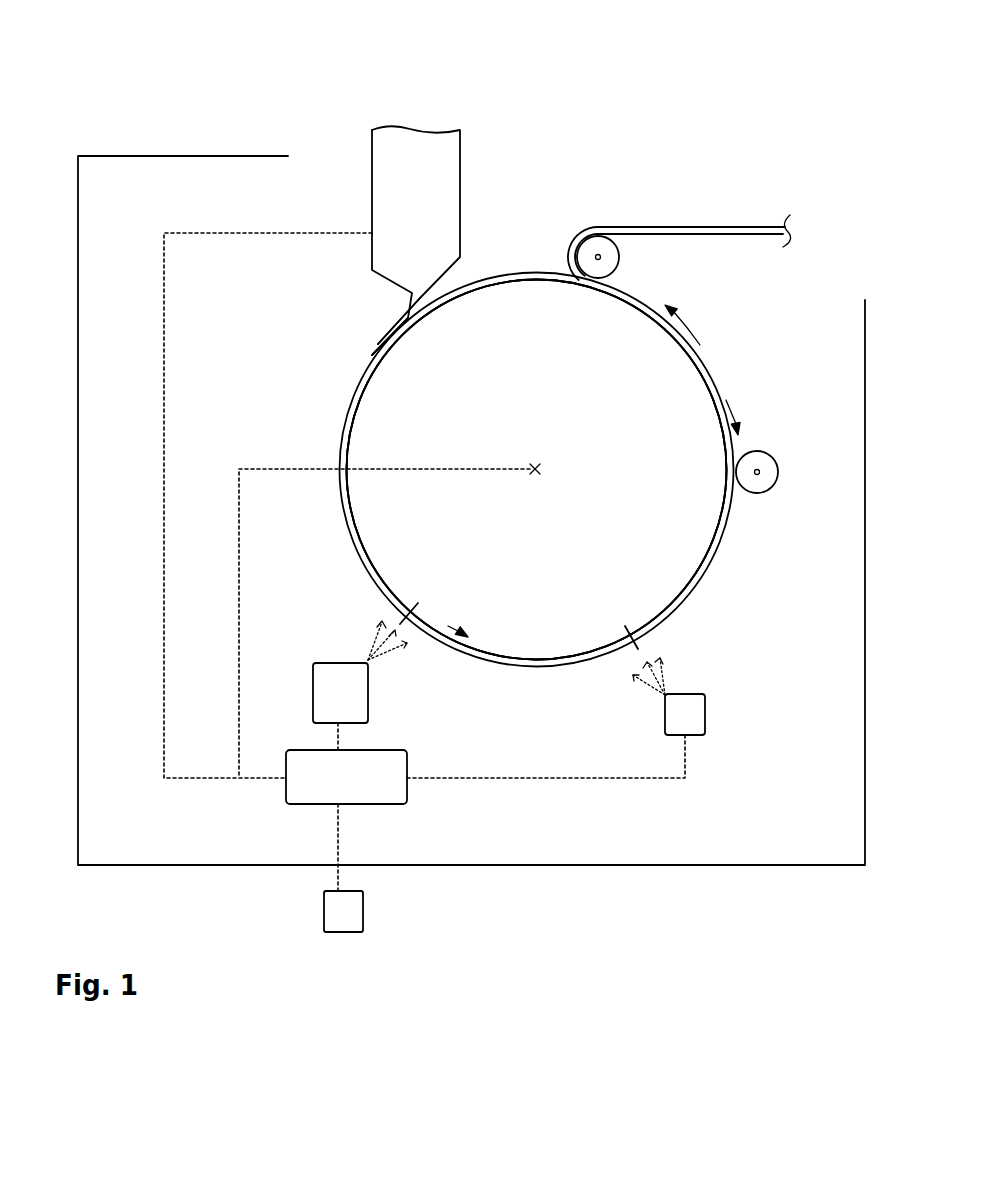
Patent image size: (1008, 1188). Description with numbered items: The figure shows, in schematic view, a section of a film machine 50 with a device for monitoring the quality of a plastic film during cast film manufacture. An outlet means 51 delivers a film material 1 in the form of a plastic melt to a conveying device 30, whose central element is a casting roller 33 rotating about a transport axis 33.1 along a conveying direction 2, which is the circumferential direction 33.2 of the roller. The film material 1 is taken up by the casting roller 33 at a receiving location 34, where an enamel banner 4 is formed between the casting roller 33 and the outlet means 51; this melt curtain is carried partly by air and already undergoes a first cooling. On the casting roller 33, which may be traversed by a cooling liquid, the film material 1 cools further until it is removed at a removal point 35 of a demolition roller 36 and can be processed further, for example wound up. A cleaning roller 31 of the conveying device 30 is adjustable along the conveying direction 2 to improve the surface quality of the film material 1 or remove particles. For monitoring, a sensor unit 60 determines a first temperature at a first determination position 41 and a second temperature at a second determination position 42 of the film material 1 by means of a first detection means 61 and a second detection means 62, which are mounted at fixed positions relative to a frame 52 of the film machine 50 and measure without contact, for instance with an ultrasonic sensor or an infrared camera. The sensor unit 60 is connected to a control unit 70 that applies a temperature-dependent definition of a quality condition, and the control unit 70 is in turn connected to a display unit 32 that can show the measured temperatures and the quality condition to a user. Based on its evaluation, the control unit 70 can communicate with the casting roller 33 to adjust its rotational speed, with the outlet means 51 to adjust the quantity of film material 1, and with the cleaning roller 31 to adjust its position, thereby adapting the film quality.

The film material 1 is at (350, 396).
The conveying direction 2 is at (457, 592).
The enamel banner 4 is at (425, 297).
The conveying device 30 is at (681, 304).
The cleaning roller 31 is at (757, 493).
The display unit 32 is at (359, 910).
The casting roller 33 is at (607, 533).
The transport axis 33.1 is at (537, 462).
The circumferential direction 33.2 is at (537, 470).
The receiving location 34 is at (425, 332).
The removal point 35 is at (591, 300).
The demolition roller 36 is at (619, 257).
The first determination position 41 is at (403, 617).
The second determination position 42 is at (635, 640).
The film machine 50 is at (471, 479).
The outlet means 51 is at (380, 187).
The frame 52 is at (575, 865).
The sensor unit 60 is at (725, 672).
The first detection means 61 is at (360, 687).
The second detection means 62 is at (682, 708).
The control unit 70 is at (397, 797).